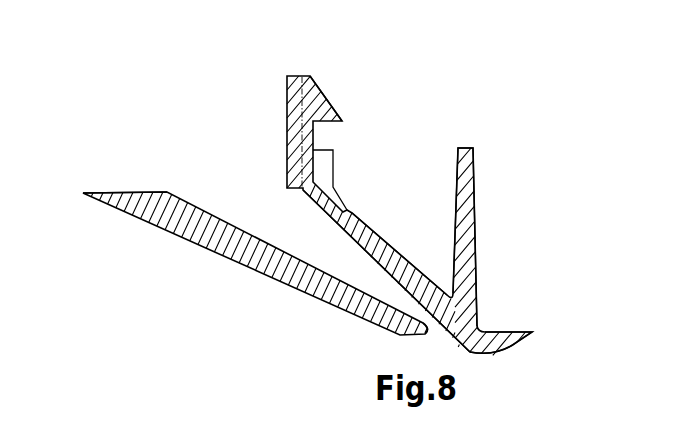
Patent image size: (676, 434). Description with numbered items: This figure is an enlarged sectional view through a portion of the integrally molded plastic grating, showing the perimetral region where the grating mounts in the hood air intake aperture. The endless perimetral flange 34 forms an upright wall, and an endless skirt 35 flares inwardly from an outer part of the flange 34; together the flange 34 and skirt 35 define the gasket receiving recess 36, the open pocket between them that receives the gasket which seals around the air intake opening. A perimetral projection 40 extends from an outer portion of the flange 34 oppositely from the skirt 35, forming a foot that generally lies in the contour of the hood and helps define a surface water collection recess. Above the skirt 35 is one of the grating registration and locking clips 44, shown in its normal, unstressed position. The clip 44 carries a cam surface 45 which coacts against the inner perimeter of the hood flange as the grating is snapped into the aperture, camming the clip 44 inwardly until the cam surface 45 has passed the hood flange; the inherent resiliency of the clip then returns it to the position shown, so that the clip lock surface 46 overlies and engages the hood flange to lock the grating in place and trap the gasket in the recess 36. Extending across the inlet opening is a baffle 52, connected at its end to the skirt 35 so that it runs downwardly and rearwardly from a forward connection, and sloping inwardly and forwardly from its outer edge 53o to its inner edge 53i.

The grating registration and locking clip 44 is at (333, 68).
The cam surface 45 is at (327, 93).
The clip lock surface 46 is at (330, 122).
The skirt 35 is at (378, 238).
The gasket receiving recess 36 is at (427, 216).
The perimetral flange 34 is at (465, 207).
The perimetral projection 40 is at (515, 332).
The baffle 52 is at (268, 276).
The inner edge of baffle 53i is at (83, 193).
The outer edge of baffle 53o is at (425, 337).